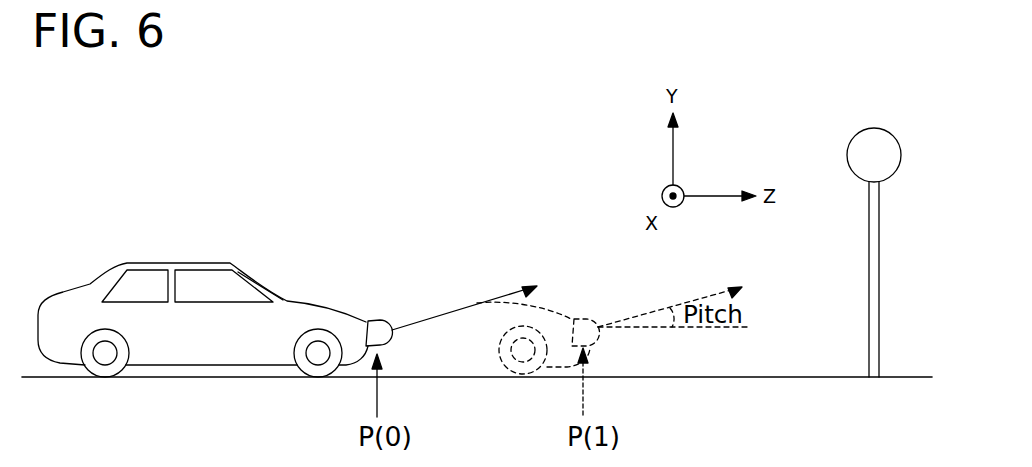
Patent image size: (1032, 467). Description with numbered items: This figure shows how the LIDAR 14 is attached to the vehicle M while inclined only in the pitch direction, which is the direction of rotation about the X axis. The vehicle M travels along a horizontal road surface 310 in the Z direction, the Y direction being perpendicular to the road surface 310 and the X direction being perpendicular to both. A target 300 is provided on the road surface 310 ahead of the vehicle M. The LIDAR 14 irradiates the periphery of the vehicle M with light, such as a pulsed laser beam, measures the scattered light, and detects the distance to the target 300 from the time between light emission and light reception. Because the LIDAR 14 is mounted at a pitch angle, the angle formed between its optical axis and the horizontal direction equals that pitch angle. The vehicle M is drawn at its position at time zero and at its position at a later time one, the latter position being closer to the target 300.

The LIDAR 14 is at (371, 320).
The vehicle M is at (184, 262).
The target 300 is at (874, 128).
The road surface 310 is at (737, 378).